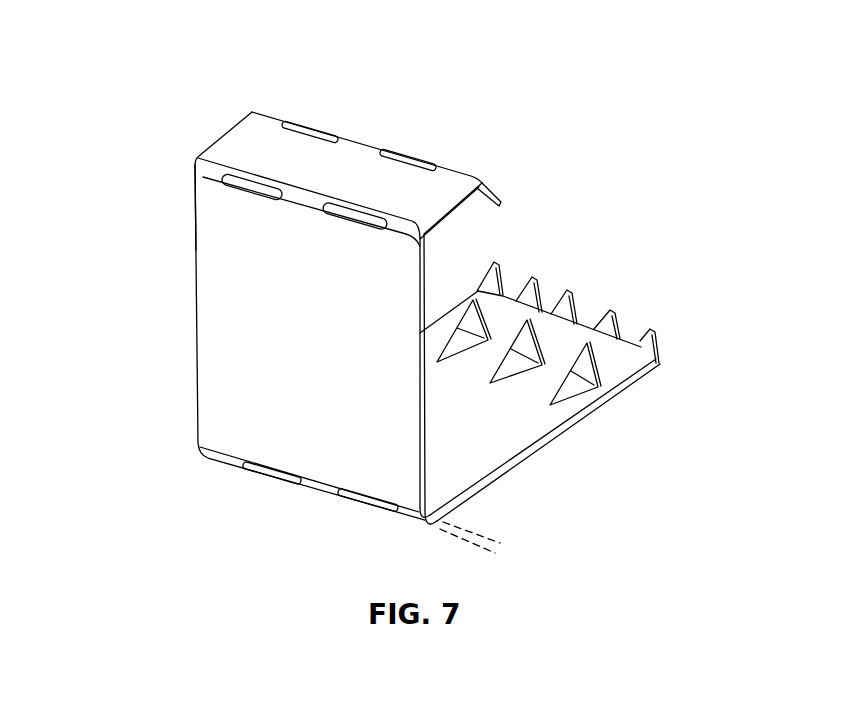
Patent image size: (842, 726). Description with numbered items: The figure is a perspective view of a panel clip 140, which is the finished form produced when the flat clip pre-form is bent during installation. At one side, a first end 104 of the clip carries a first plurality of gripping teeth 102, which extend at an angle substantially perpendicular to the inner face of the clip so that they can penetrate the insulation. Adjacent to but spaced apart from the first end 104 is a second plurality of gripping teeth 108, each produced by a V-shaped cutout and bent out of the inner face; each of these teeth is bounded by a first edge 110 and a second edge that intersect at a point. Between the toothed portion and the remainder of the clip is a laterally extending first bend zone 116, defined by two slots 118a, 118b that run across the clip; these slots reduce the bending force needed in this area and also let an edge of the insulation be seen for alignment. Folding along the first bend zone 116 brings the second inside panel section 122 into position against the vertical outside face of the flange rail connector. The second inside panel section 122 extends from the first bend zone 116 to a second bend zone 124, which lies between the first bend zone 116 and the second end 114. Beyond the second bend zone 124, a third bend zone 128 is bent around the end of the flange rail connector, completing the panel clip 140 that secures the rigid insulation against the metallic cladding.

The panel clip 140 is at (531, 170).
The second inside panel section 122 is at (208, 327).
The third bend zone 128 is at (251, 112).
The second bend zone 124 is at (194, 158).
The second end 114 is at (482, 204).
The first end 104 is at (662, 371).
The first edge 110 is at (593, 367).
The gripping teeth 102 is at (510, 257).
The gripping teeth 108 is at (463, 310).
The slot 118a is at (372, 509).
The slot 118b is at (270, 484).
The first bend zone 116 is at (499, 540).